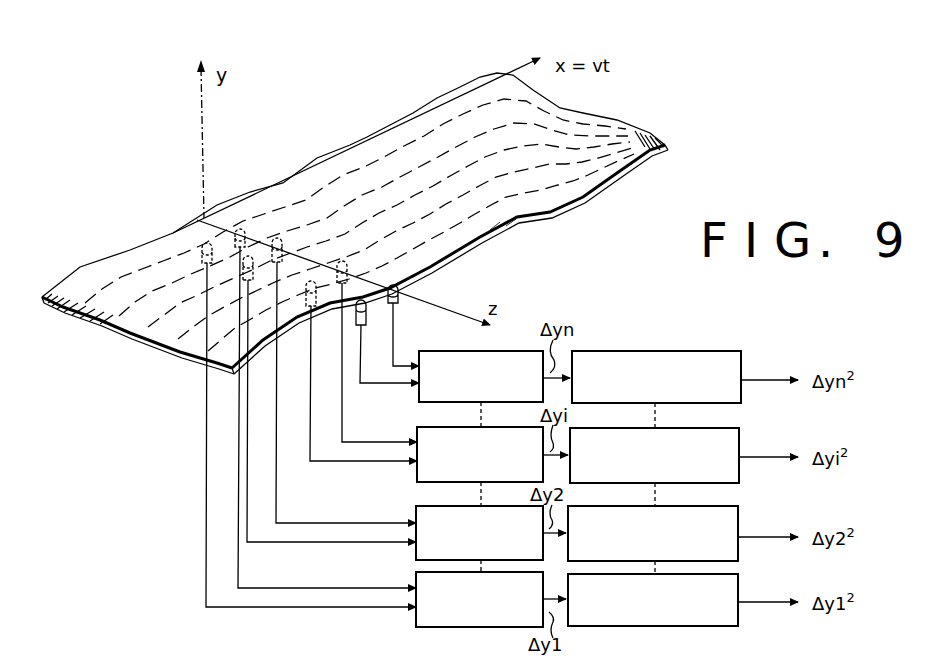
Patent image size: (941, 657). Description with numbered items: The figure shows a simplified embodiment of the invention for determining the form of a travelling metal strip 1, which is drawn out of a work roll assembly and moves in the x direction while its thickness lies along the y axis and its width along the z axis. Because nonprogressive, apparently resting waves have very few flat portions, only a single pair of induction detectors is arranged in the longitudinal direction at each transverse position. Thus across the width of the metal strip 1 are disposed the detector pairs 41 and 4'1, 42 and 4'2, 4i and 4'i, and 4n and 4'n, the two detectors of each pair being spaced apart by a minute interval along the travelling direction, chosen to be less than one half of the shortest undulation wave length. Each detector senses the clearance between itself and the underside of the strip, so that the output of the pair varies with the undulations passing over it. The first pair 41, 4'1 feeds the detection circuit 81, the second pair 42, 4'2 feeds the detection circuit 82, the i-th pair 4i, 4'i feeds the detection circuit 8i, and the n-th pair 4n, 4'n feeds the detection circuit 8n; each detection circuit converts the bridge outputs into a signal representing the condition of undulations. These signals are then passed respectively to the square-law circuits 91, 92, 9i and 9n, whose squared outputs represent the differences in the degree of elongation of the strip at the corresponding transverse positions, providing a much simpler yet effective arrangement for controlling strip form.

The metal strip 1 is at (611, 180).
The detector 41 is at (181, 239).
The detector 4'1 is at (310, 370).
The detector 42 is at (216, 293).
The detector 4'2 is at (344, 372).
The detector 4i is at (312, 310).
The detector 4'i is at (377, 344).
The detector 4n is at (398, 334).
The detector 4'n is at (417, 324).
The detection circuit 8n is at (455, 359).
The detection circuit 8i is at (417, 438).
The detection circuit 82 is at (421, 528).
The detection circuit 81 is at (441, 627).
The square-law circuit 9n is at (693, 363).
The square-law circuit 9i is at (736, 447).
The square-law circuit 92 is at (737, 524).
The square-law circuit 91 is at (718, 626).